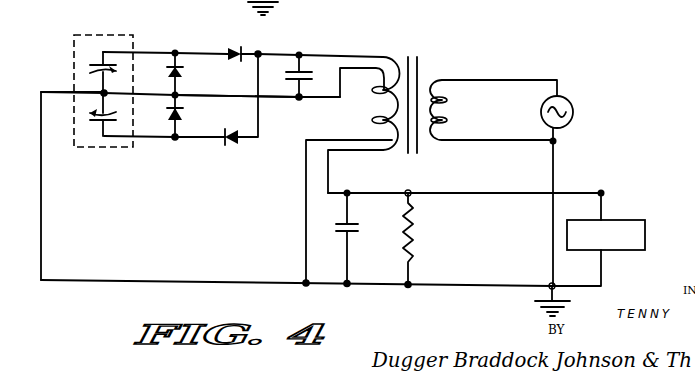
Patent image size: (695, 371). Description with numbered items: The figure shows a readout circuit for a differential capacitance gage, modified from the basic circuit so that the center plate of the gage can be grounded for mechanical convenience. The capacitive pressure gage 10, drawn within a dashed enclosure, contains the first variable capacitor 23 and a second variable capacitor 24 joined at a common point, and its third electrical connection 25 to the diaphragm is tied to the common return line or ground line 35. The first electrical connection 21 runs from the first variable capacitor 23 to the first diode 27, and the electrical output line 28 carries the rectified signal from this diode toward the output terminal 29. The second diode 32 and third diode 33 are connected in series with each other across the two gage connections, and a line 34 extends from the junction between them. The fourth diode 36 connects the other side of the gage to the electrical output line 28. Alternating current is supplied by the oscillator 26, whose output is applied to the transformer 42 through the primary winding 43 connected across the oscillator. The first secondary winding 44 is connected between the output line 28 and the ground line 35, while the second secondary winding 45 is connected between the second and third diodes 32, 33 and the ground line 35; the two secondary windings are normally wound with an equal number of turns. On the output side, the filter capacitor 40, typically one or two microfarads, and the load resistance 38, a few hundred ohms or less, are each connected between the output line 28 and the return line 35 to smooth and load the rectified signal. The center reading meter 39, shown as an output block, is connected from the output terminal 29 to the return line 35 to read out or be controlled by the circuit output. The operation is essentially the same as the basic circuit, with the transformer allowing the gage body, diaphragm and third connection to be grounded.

The capacitive pressure gage 10 is at (128, 36).
The first electrical connection 21 is at (148, 53).
The first variable capacitor 23 is at (95, 65).
The variable capacitor 24 is at (86, 116).
The third electrical connection 25 is at (50, 76).
The oscillator 26 is at (574, 106).
The first diode 27 is at (232, 50).
The electrical output line 28 is at (325, 55).
The output terminal 29 is at (604, 193).
The second diode 32 is at (182, 74).
The third diode 33 is at (183, 113).
The line 34 is at (215, 101).
The common return line or ground line 35 is at (208, 282).
The fourth diode 36 is at (235, 146).
The load resistance 38 is at (413, 238).
The center reading meter 39 is at (646, 232).
The filter capacitor 40 is at (352, 228).
The transformer 42 is at (425, 63).
The primary winding 43 is at (460, 80).
The first secondary winding 44 is at (396, 56).
The second secondary winding 45 is at (378, 73).